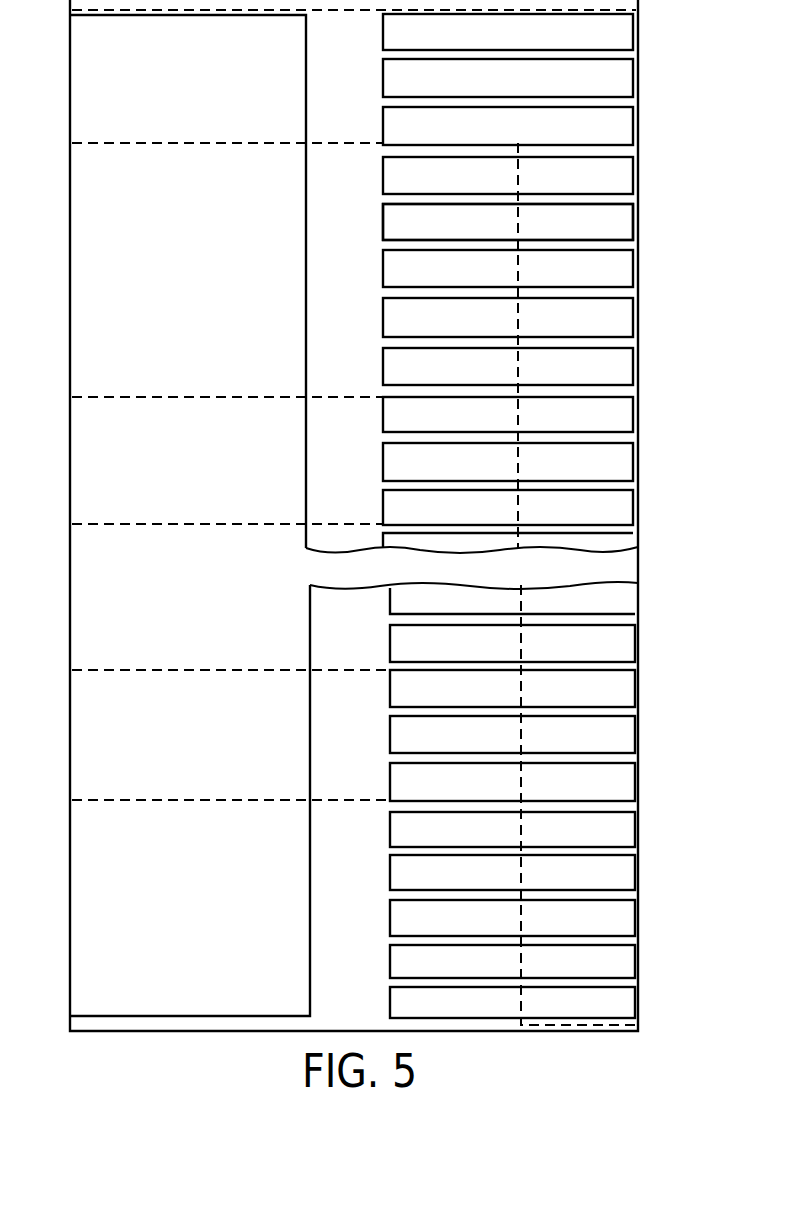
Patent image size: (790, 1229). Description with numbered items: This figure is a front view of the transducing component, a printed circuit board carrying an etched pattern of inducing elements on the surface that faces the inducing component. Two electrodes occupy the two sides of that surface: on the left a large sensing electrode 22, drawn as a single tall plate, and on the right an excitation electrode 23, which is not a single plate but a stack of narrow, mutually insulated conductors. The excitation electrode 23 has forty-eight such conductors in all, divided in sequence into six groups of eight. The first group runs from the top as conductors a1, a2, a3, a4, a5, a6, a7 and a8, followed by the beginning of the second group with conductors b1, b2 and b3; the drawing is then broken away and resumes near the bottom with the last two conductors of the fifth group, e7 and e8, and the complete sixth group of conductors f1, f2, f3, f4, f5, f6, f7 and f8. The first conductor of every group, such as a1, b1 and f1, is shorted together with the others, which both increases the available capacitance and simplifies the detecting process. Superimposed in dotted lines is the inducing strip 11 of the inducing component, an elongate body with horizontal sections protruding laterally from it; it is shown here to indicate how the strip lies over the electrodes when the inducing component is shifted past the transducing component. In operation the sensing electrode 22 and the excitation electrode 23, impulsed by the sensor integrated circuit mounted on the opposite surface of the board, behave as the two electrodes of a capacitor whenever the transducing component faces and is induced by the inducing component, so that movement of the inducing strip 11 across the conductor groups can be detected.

The inducing strip 11 is at (110, 146).
The sensing electrode 22 is at (97, 948).
The excitation electrode 23 is at (392, 220).
The conductor a1 is at (636, 32).
The conductor a2 is at (636, 78).
The conductor a3 is at (636, 126).
The conductor a4 is at (636, 175).
The conductor a5 is at (636, 222).
The conductor a6 is at (636, 268).
The conductor a7 is at (636, 318).
The conductor a8 is at (636, 366).
The conductor b1 is at (636, 414).
The conductor b2 is at (636, 462).
The conductor b3 is at (636, 508).
The conductor e7 is at (659, 528).
The conductor e8 is at (638, 642).
The conductor f1 is at (638, 688).
The conductor f2 is at (638, 735).
The conductor f3 is at (638, 782).
The conductor f4 is at (638, 830).
The conductor f5 is at (638, 872).
The conductor f6 is at (638, 918).
The conductor f7 is at (638, 961).
The conductor f8 is at (638, 1003).